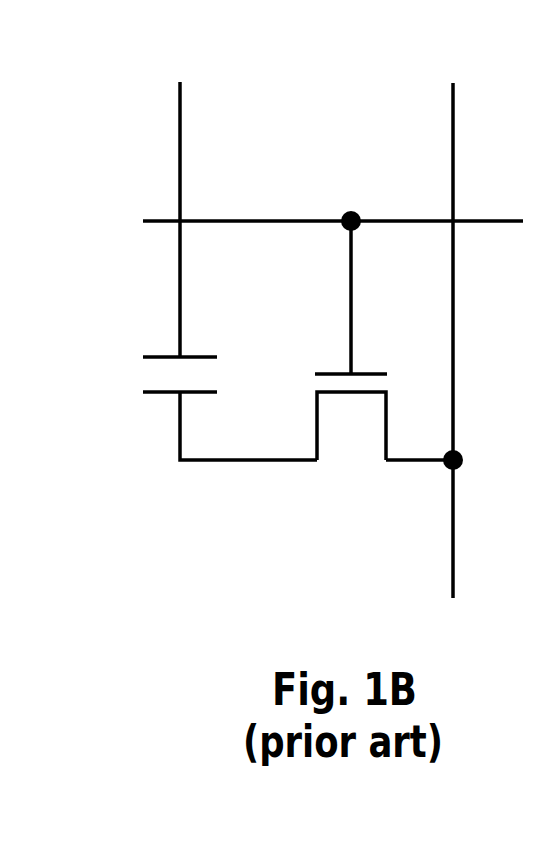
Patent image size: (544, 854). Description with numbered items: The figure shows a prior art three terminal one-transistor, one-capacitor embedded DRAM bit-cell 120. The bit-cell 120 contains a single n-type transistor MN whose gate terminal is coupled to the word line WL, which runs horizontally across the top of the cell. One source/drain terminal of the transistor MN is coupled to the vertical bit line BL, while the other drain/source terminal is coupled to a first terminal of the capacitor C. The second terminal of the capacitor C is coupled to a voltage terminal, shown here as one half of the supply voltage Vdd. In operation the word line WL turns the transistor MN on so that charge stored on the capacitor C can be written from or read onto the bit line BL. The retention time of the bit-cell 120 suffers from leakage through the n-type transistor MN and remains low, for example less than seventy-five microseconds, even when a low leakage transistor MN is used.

The eDRAM bit-cell 120 is at (334, 128).
The word line WL is at (309, 221).
The bit line BL is at (453, 355).
The capacitor C is at (164, 374).
The n-type transistor MN is at (351, 354).